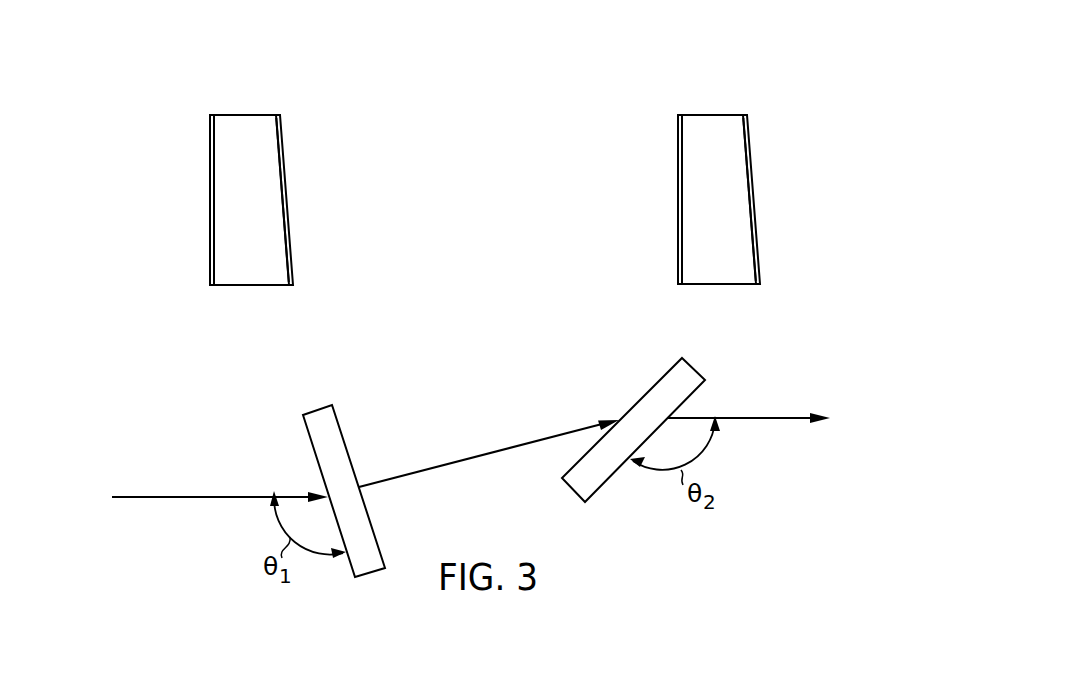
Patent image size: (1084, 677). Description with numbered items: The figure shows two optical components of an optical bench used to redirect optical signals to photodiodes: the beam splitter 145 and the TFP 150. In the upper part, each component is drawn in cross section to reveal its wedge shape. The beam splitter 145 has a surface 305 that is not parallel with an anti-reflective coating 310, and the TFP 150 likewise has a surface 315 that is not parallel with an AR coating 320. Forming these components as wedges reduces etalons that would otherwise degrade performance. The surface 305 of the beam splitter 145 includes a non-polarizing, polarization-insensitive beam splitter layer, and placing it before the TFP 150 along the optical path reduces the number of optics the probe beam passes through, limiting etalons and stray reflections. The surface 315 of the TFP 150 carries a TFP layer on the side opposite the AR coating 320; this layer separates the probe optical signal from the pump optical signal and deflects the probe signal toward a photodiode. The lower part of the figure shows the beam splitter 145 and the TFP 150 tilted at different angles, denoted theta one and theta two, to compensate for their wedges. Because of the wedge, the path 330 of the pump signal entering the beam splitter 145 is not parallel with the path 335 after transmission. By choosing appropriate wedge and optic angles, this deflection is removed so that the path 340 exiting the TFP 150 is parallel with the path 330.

The beam splitter 145 is at (330, 405).
The TFP 150 is at (667, 373).
The surface 305 is at (211, 200).
The anti-reflective (AR) coating 310 is at (288, 200).
The surface 315 is at (679, 200).
The AR coating 320 is at (754, 200).
The path 330 is at (142, 497).
The path 335 is at (478, 456).
The path 340 is at (786, 418).